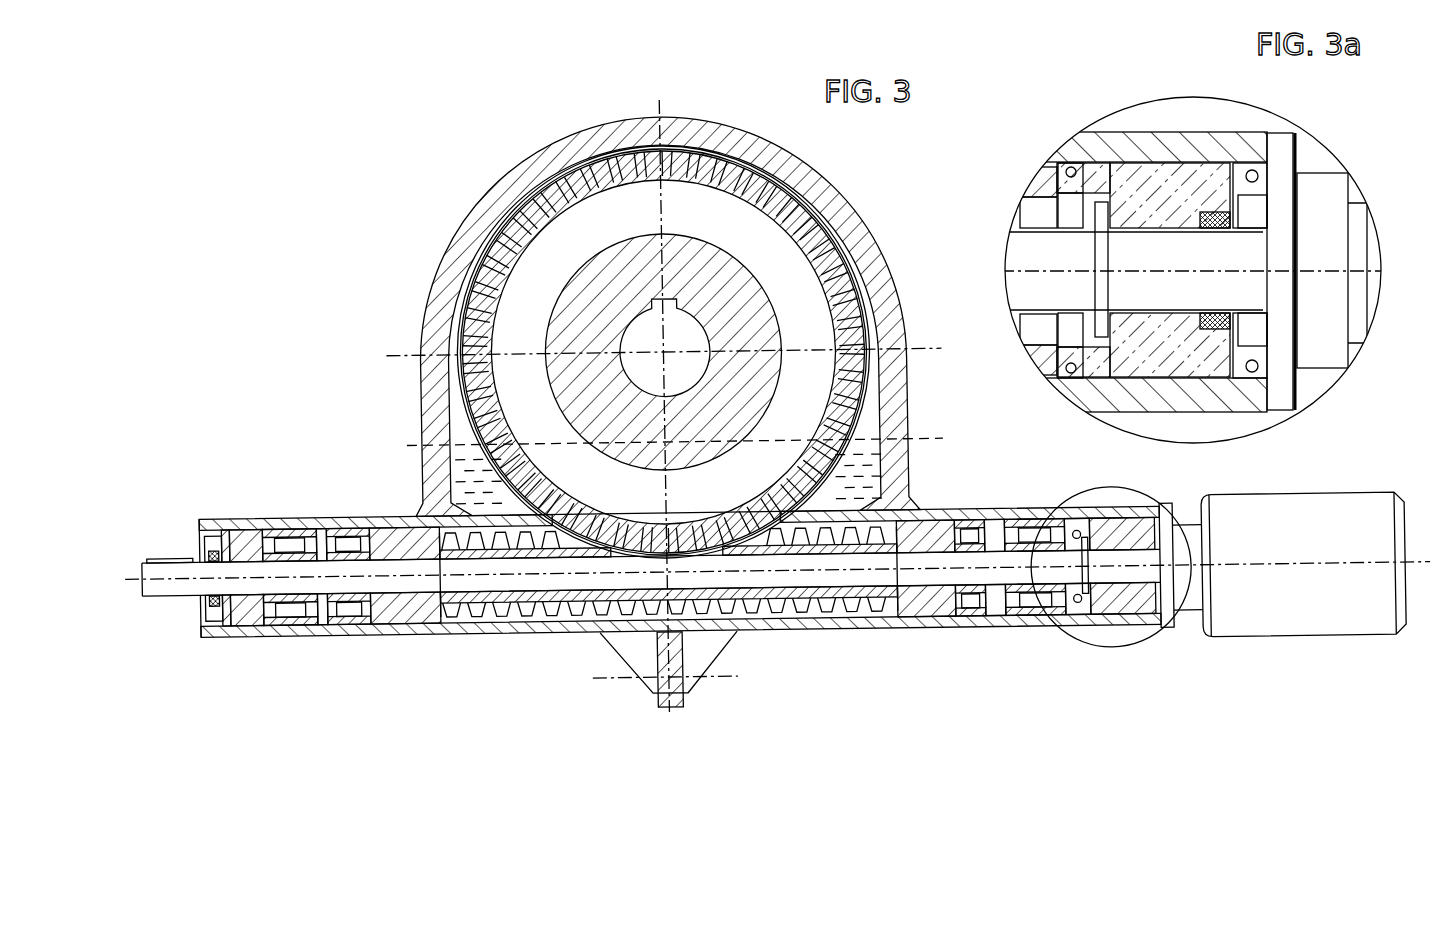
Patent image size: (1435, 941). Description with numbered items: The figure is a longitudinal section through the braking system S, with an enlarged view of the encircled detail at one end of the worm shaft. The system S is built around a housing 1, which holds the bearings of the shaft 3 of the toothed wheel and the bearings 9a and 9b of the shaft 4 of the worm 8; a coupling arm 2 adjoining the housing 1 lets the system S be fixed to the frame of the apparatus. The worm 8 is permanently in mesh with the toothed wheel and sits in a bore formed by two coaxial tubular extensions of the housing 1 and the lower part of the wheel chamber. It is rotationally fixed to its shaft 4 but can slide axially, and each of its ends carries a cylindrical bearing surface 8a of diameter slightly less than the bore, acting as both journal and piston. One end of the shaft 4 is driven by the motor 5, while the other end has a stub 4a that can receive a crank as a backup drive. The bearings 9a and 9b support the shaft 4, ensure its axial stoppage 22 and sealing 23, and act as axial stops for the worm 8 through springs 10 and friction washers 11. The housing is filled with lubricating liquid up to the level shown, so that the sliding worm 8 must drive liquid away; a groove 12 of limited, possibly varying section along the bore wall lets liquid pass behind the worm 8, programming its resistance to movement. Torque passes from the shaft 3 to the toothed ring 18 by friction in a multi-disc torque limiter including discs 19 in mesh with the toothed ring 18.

In FIG. 3, the braking system S is at (775, 450).
In FIG. 3, the housing 1 is at (426, 483).
In FIG. 3, the coupling arm 2 is at (656, 713).
In FIG. 3, the shaft 3 is at (602, 290).
In FIG. 3, the shaft 4 is at (645, 671).
In FIG. 3, the stub 4a is at (160, 586).
In FIG. 3, the motor 5 is at (1253, 598).
In FIG. 3, the worm 8 is at (841, 610).
In FIG. 3, the cylindrical bearing surface 8a is at (424, 603).
In FIG. 3, the bearing 9a is at (231, 617).
In FIG. 3, the bearing 9b is at (1107, 609).
In FIG. 3, the spring 10 is at (291, 608).
In FIG. 3, the friction washer 11 is at (360, 609).
In FIG. 3, the groove 12 is at (447, 528).
In FIG. 3, the toothed ring 18 is at (553, 353).
In FIG. 3, the disc 19 is at (521, 311).
In FIG. 3A, the axial stoppage 22 is at (1120, 198).
In FIG. 3A, the sealing 23 is at (1207, 203).